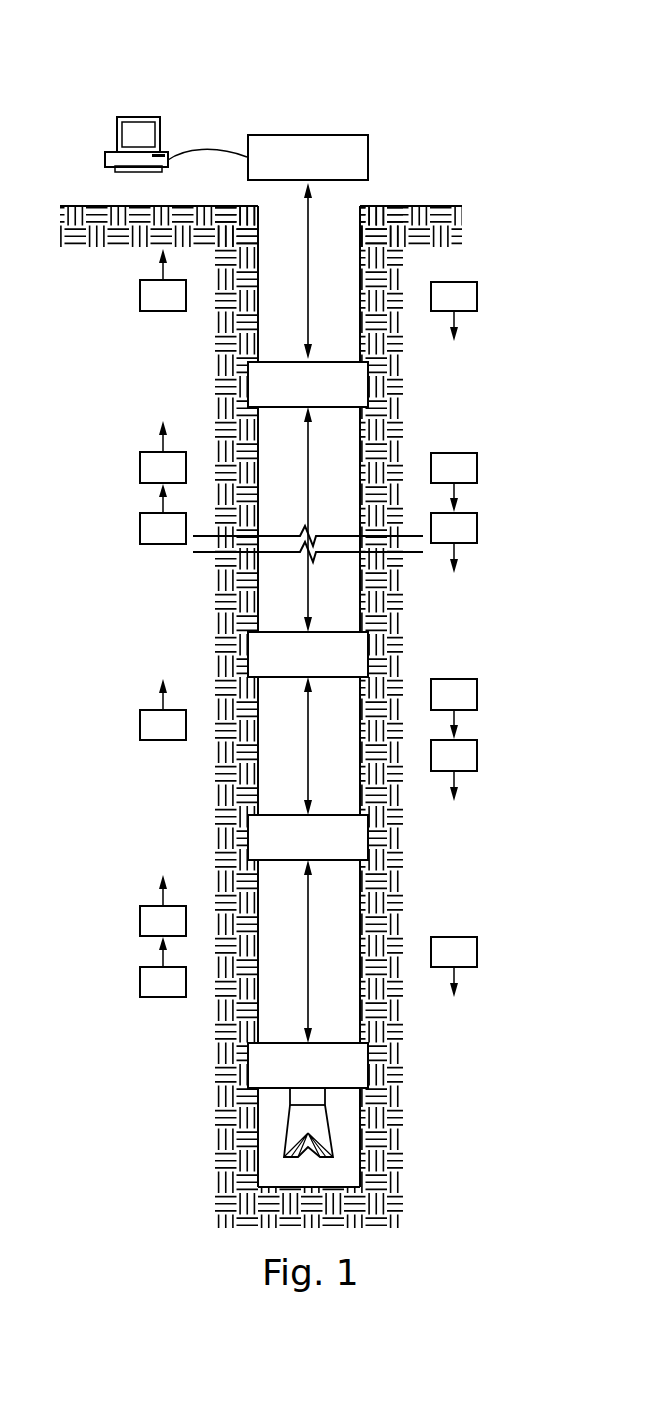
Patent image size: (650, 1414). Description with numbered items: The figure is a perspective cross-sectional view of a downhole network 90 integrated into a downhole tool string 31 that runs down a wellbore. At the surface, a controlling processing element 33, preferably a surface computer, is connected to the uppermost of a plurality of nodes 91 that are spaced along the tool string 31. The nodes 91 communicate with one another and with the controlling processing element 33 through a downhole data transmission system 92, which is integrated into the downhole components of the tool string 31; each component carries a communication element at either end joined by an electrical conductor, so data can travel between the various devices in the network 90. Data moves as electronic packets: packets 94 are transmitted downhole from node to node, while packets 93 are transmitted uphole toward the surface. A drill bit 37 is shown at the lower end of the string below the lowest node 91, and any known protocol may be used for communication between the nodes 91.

The downhole network 90 is at (173, 45).
The controlling processing element 33 is at (160, 125).
The node 91 is at (347, 135).
The downhole tool string 31 is at (350, 198).
The downhole data transmission system 92 is at (312, 286).
The electronic packets transmitted uphole 93 is at (140, 296).
The electronic packets transmitted downhole 94 is at (477, 295).
The drill bit 37 is at (297, 1123).